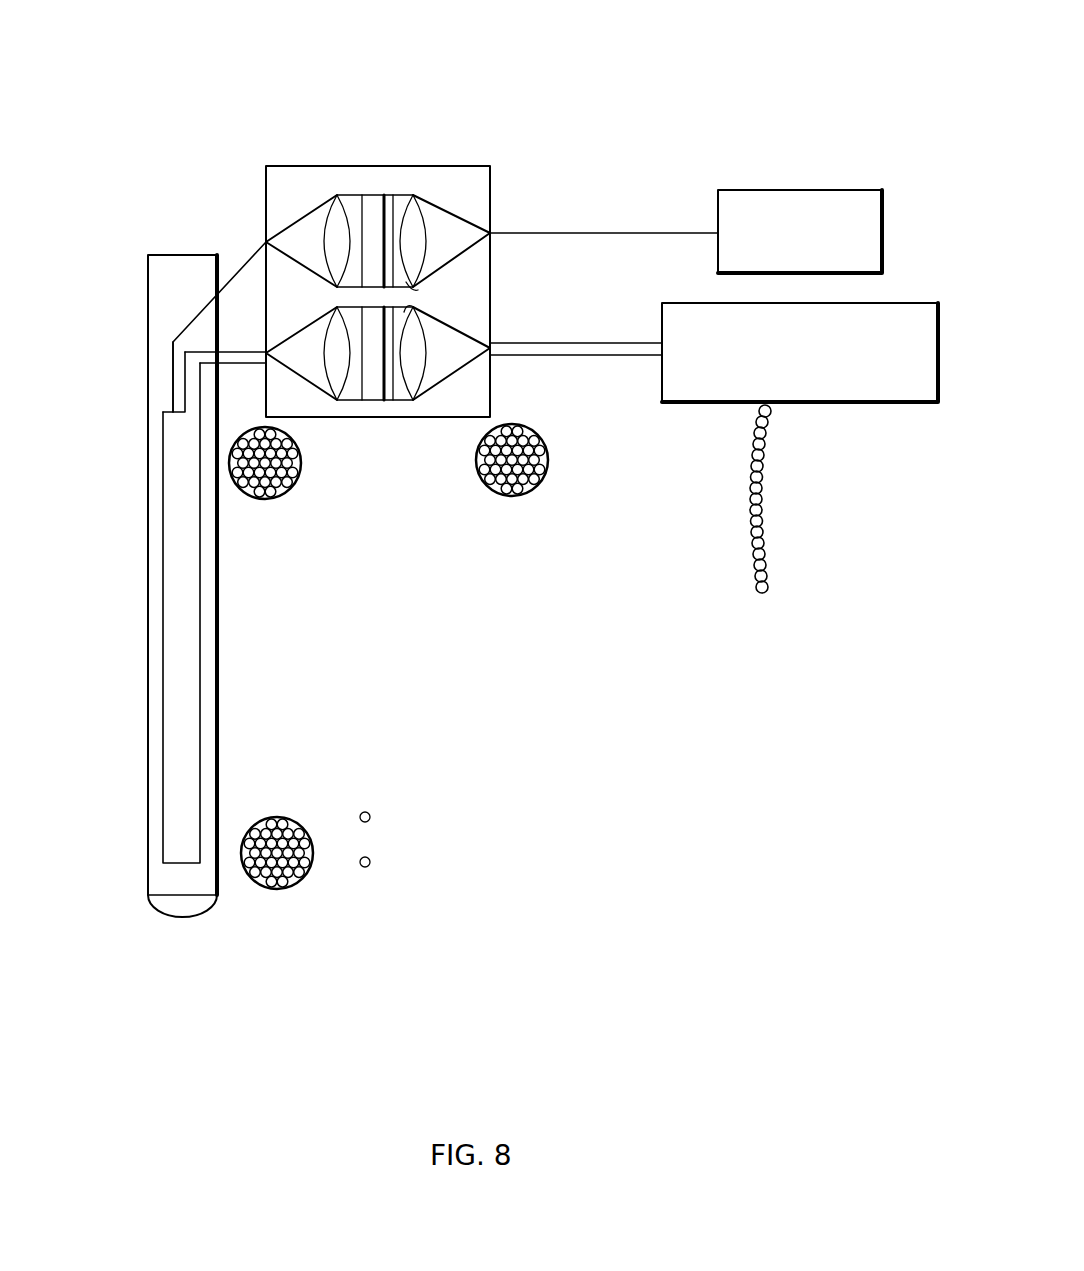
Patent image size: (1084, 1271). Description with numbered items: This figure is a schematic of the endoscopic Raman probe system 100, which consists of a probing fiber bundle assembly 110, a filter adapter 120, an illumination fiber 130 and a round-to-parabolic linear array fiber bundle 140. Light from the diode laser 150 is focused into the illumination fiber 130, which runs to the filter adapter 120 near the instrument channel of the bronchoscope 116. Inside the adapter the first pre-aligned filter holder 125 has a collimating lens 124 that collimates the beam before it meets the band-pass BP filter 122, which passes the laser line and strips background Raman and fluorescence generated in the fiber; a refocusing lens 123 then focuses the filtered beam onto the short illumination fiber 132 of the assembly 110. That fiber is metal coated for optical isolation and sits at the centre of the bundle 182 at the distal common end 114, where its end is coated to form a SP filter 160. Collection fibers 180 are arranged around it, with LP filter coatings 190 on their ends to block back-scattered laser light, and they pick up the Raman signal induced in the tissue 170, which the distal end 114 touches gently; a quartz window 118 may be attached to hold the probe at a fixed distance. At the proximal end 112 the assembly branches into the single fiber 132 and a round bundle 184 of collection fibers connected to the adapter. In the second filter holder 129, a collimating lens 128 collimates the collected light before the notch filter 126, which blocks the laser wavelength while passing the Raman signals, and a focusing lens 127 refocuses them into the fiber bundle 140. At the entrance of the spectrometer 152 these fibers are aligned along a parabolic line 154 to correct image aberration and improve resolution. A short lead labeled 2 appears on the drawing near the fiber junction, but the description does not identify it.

The optical fiber 2 is at (172, 385).
The endoscopic Raman probe system 100 is at (738, 779).
The probing fiber bundle assembly 110 is at (163, 610).
The proximal end 112 is at (177, 571).
The distal end 114 is at (175, 865).
The bronchoscope 116 is at (175, 270).
The quartz window 118 is at (185, 905).
The filter adapter 120 is at (491, 166).
The BP filter 122 is at (375, 210).
The refocusing lens 123 is at (337, 205).
The collimating lens 124 is at (417, 205).
The filter holder 125 is at (412, 290).
The notch filter 126 is at (372, 387).
The focusing lens 127 is at (417, 377).
The collimating lens 128 is at (340, 377).
The filter holder 129 is at (410, 306).
The illumination fiber 130 is at (672, 232).
The illumination fiber 132 is at (238, 270).
The round-to-parabolic linear array fiber bundle 140 is at (607, 358).
The diode laser 150 is at (843, 190).
The spectrometer 152 is at (835, 405).
The parabolic line 154 is at (770, 550).
The SP filter 160 is at (371, 818).
The tissue 170 is at (230, 1019).
The collection fibers 180 is at (248, 365).
The bundle 182 is at (277, 815).
The round bundle 184 is at (280, 497).
The LP filter coatings 190 is at (371, 863).